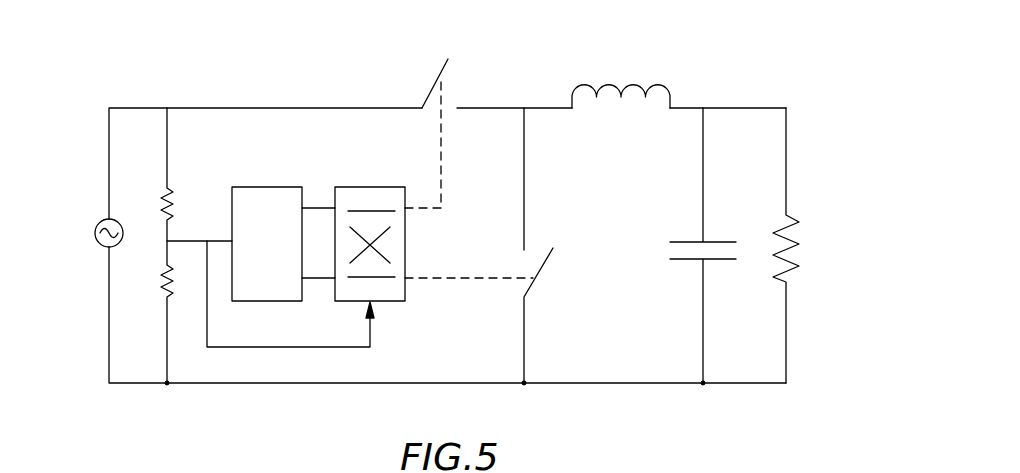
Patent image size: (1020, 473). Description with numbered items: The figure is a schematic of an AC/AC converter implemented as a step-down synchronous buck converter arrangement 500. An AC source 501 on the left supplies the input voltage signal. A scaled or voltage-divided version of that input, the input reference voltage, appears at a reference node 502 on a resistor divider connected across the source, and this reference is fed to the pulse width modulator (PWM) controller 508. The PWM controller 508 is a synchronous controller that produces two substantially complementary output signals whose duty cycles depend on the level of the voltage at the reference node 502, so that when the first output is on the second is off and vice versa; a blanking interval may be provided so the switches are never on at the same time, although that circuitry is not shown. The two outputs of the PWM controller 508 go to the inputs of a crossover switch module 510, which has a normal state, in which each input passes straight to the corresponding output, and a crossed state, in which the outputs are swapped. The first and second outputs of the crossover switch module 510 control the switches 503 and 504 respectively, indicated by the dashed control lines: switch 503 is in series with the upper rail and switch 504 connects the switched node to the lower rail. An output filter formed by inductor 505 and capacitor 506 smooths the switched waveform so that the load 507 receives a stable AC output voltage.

The step-down synchronous buck converter arrangement 500 is at (684, 53).
The AC source 501 is at (94, 233).
The reference node 502 is at (197, 240).
The switch 503 is at (438, 77).
The switch 504 is at (547, 263).
The inductor 505 is at (609, 84).
The capacitor 506 is at (693, 249).
The load 507 is at (797, 240).
The pulse width modulator (PWM) controller 508 is at (270, 187).
The crossover switch module 510 is at (372, 187).